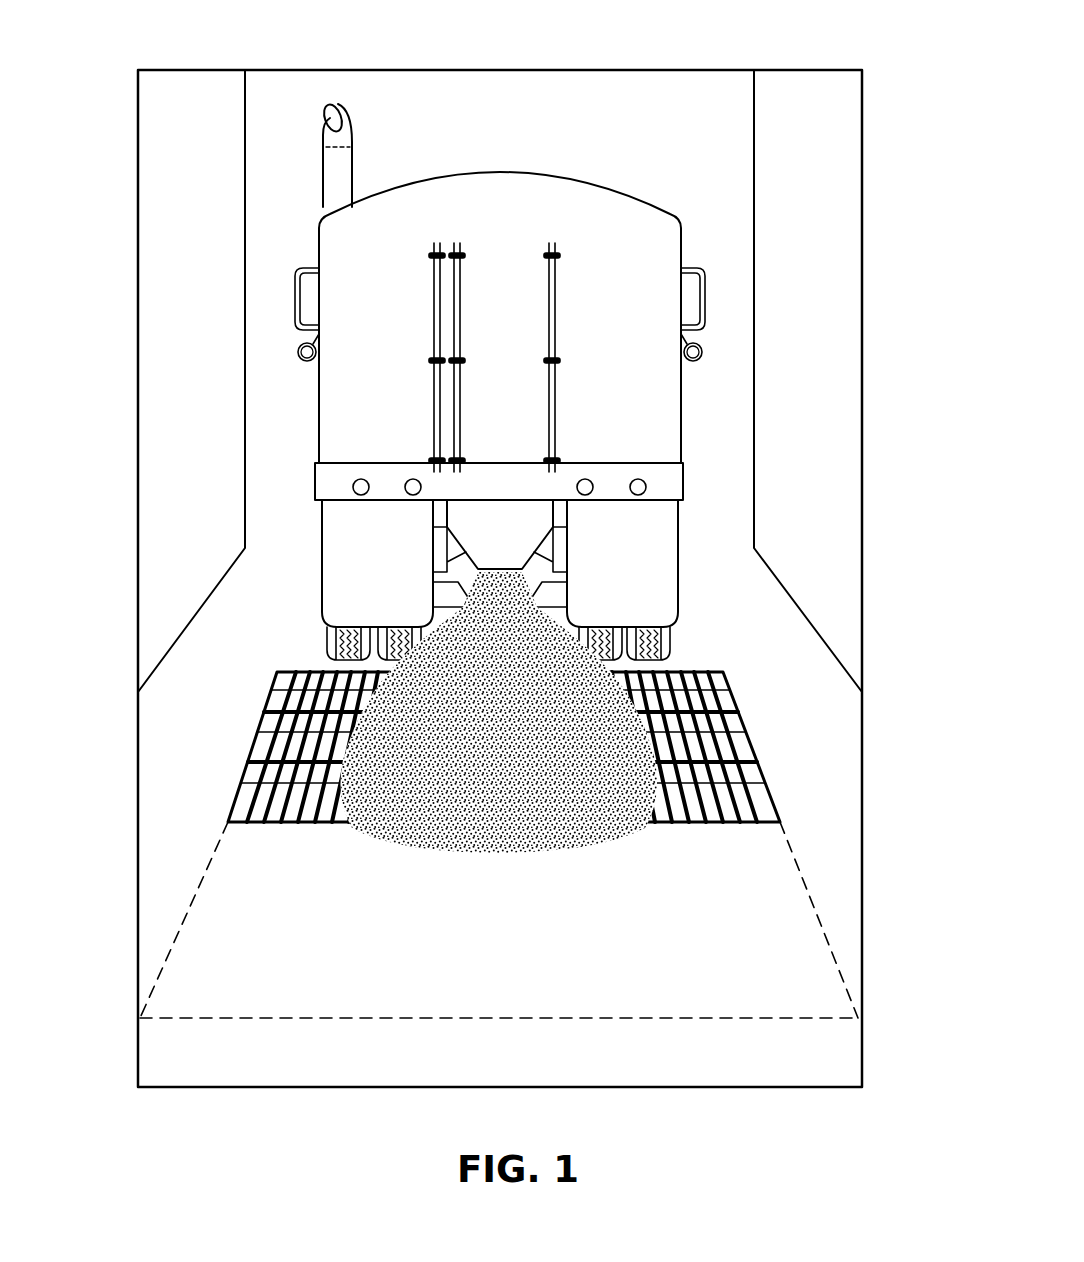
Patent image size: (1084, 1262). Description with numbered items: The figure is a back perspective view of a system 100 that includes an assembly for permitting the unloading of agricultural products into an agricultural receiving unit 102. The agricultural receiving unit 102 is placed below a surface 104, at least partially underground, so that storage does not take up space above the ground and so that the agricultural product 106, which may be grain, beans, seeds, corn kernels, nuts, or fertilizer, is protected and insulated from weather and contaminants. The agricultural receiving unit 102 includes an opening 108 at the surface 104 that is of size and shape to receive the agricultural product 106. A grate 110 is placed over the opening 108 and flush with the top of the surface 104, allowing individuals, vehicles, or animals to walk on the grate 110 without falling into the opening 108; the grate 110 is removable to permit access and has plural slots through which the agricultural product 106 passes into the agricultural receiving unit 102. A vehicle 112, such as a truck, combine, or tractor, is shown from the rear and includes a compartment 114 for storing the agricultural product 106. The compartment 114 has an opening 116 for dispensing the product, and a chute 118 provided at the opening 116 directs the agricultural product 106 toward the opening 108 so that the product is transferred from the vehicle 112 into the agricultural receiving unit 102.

The system 100 is at (722, 48).
The agricultural receiving unit 102 is at (181, 720).
The surface 104 is at (217, 948).
The agricultural product 106 is at (572, 693).
The opening 108 is at (725, 795).
The grate 110 is at (697, 758).
The vehicle 112 is at (681, 445).
The compartment 114 is at (681, 388).
The opening 116 is at (475, 567).
The chute 118 is at (522, 572).